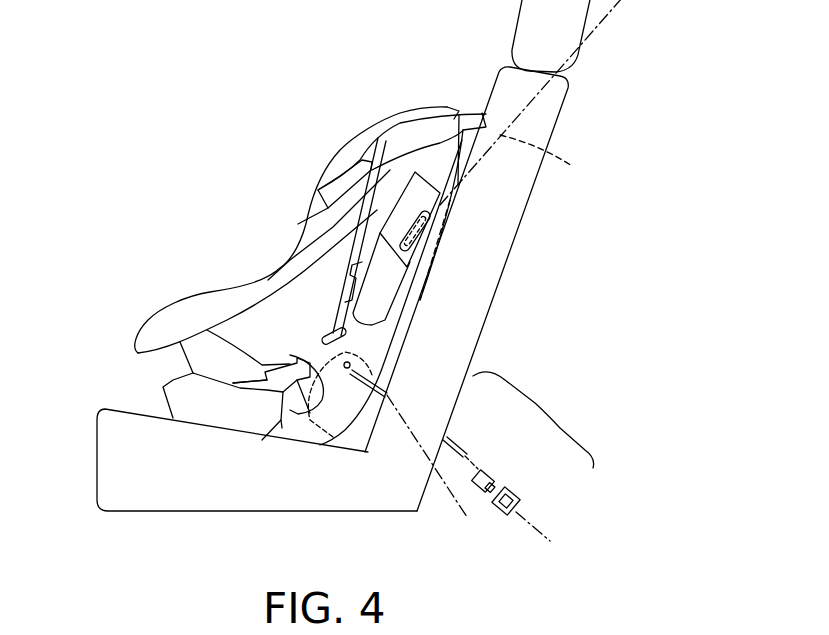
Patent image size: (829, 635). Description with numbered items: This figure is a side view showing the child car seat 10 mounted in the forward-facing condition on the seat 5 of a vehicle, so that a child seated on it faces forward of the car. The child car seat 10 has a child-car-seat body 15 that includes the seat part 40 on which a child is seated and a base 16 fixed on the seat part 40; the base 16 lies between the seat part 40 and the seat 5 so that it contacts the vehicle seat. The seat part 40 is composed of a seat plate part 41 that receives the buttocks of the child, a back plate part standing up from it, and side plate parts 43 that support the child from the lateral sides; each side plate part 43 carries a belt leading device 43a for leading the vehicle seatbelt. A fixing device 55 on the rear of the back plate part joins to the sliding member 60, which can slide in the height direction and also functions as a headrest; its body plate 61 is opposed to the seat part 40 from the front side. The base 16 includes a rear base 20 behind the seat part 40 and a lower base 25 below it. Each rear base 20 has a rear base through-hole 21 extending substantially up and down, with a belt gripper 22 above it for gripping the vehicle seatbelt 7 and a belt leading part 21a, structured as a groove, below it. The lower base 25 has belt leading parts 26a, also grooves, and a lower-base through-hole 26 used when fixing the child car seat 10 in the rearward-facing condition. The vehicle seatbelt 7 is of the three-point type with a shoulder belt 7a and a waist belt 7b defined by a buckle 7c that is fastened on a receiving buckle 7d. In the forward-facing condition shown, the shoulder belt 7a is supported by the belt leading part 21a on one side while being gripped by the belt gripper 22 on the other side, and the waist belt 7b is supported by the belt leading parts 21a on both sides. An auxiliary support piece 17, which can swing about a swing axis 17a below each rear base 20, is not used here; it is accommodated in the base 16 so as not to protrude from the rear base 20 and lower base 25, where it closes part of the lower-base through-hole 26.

The seat 5 is at (262, 511).
The seatbelt 7 is at (621, 7).
The shoulder belt 7a is at (445, 438).
The waist belt 7b is at (466, 458).
The buckle 7c is at (490, 474).
The receiving buckle 7d is at (515, 494).
The child car seat 10 is at (326, 108).
The child-car-seat body 15 is at (108, 323).
The base 16 is at (283, 430).
The auxiliary support piece 17 is at (313, 395).
The swing axis 17a is at (349, 372).
The rear base 20 is at (435, 275).
The rear base through-hole 21 is at (388, 297).
The belt leading part 21a is at (347, 342).
The belt gripper 22 is at (415, 247).
The lower base 25 is at (231, 428).
The lower-base through-hole 26 is at (267, 395).
The belt leading part 26a is at (233, 385).
The seat part 40 is at (212, 231).
The seat plate part 41 is at (388, 200).
The side plate part 43 is at (287, 307).
The belt leading device 43a is at (333, 190).
The fixing device 55 is at (362, 272).
The sliding member 60 is at (435, 107).
The body plate 61 is at (407, 110).